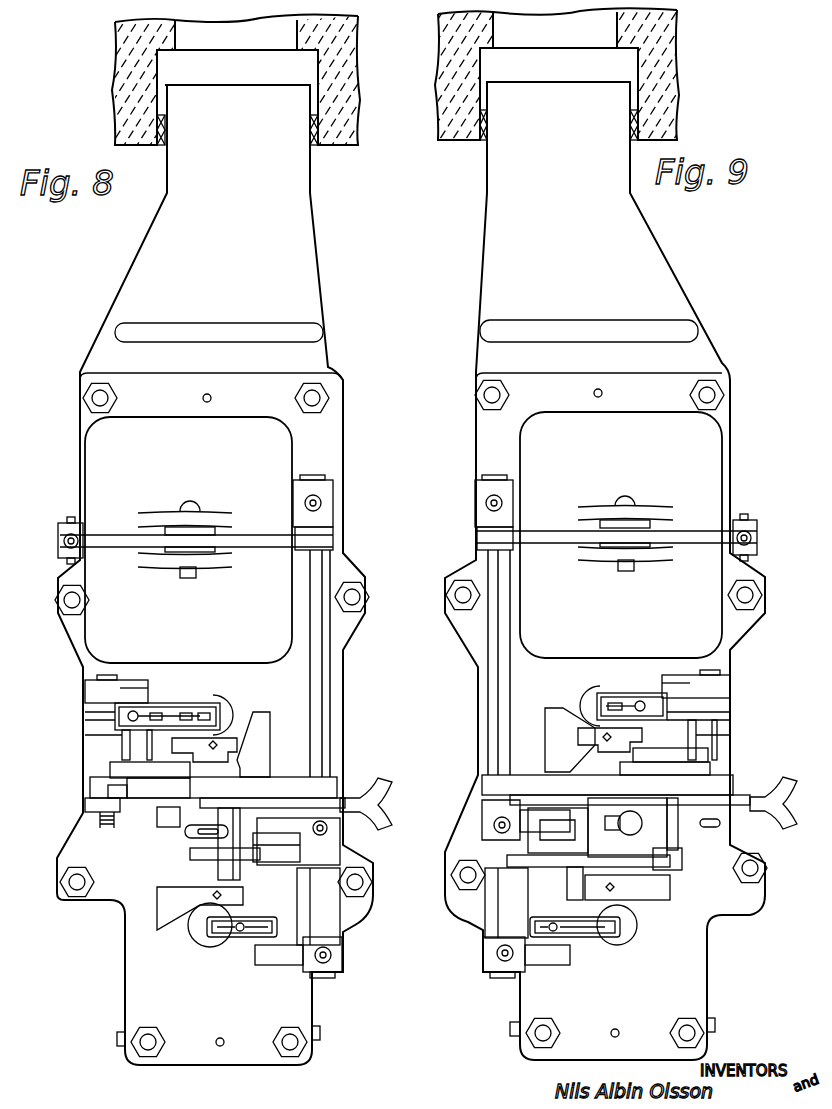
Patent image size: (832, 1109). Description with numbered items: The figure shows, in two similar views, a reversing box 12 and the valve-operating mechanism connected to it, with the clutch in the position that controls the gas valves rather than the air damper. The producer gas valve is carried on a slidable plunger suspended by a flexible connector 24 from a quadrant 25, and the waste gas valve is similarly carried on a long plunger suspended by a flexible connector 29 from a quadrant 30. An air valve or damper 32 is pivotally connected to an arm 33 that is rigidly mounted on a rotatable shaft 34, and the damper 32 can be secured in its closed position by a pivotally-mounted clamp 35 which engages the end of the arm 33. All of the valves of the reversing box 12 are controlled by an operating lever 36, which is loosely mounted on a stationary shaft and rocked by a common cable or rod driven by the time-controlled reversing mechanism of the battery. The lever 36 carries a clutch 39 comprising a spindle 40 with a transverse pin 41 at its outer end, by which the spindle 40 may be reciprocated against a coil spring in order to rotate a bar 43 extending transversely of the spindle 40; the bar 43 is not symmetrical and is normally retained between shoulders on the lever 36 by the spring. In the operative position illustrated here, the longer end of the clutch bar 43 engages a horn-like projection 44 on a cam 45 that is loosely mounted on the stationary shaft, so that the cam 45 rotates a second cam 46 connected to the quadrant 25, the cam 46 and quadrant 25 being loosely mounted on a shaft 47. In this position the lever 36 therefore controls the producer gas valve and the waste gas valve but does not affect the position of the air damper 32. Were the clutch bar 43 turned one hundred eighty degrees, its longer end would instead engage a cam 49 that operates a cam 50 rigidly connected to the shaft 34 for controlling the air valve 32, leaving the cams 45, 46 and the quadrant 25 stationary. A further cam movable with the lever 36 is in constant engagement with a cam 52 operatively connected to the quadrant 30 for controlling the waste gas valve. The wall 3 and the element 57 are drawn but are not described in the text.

In FIG. 8, the casing wall 3 is at (347, 90).
In FIG. 9, the casing wall 3 is at (452, 80).
In FIG. 8, the reversing box 12 is at (132, 993).
In FIG. 9, the reversing box 12 is at (697, 950).
In FIG. 8, the flexible connector 24 is at (243, 937).
In FIG. 9, the flexible connector 24 is at (585, 937).
In FIG. 8, the quadrant 25 is at (205, 945).
In FIG. 9, the quadrant 25 is at (620, 945).
In FIG. 8, the flexible connector 29 is at (192, 705).
In FIG. 9, the flexible connector 29 is at (615, 700).
In FIG. 8, the quadrant 30 is at (205, 705).
In FIG. 9, the quadrant 30 is at (635, 700).
In FIG. 8, the air valve or damper 32 is at (252, 421).
In FIG. 9, the air valve or damper 32 is at (646, 418).
In FIG. 8, the arm 33 is at (258, 536).
In FIG. 9, the arm 33 is at (685, 528).
In FIG. 8, the rotatable shaft 34 is at (322, 672).
In FIG. 9, the rotatable shaft 34 is at (490, 684).
In FIG. 8, the pivotally-mounted clamp 35 is at (58, 543).
In FIG. 9, the pivotally-mounted clamp 35 is at (758, 529).
In FIG. 8, the operating lever 36 is at (380, 806).
In FIG. 9, the operating lever 36 is at (775, 800).
In FIG. 8, the clutch 39 is at (293, 835).
In FIG. 9, the clutch 39 is at (625, 838).
In FIG. 8, the spindle 40 is at (157, 816).
In FIG. 9, the spindle 40 is at (700, 838).
In FIG. 8, the transverse pin 41 is at (185, 833).
In FIG. 9, the transverse pin 41 is at (716, 827).
In FIG. 8, the clutch bar 43 is at (228, 852).
In FIG. 9, the clutch bar 43 is at (682, 862).
In FIG. 8, the horn-like projection 44 is at (276, 848).
In FIG. 9, the horn-like projection 44 is at (672, 842).
In FIG. 8, the cam 45 is at (180, 880).
In FIG. 9, the cam 45 is at (585, 890).
In FIG. 8, the second cam 46 is at (300, 880).
In FIG. 9, the second cam 46 is at (520, 880).
In FIG. 8, the shaft 47 is at (325, 978).
In FIG. 9, the shaft 47 is at (505, 978).
In FIG. 8, the cam 49 is at (158, 790).
In FIG. 9, the cam 49 is at (665, 772).
In FIG. 8, the cam 50 is at (278, 785).
In FIG. 9, the cam 50 is at (538, 785).
In FIG. 8, the cam 52 is at (125, 768).
In FIG. 9, the cam 52 is at (700, 754).
In FIG. 8, the cam 57 is at (262, 731).
In FIG. 9, the cam 57 is at (575, 738).